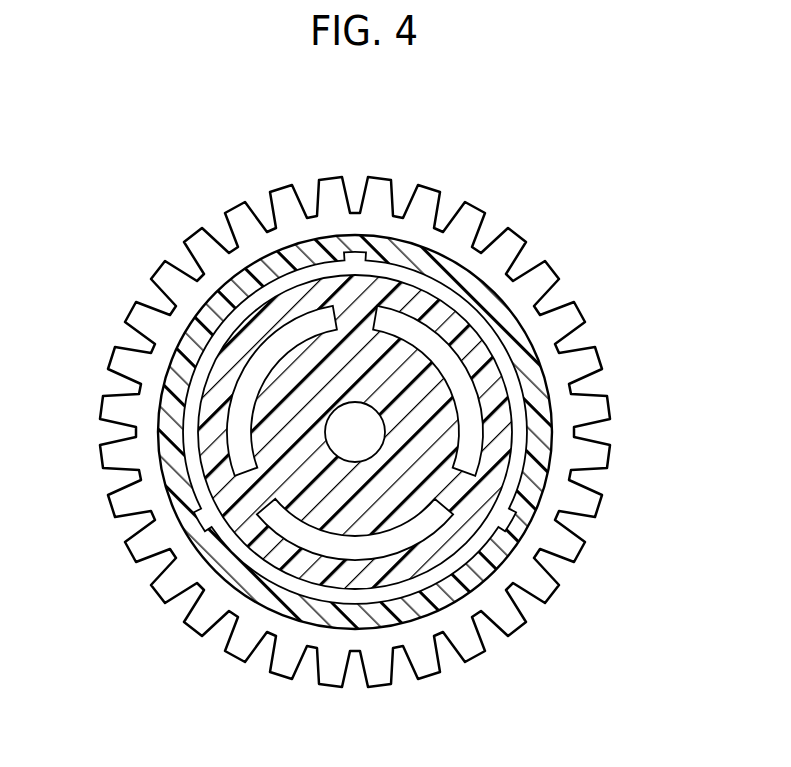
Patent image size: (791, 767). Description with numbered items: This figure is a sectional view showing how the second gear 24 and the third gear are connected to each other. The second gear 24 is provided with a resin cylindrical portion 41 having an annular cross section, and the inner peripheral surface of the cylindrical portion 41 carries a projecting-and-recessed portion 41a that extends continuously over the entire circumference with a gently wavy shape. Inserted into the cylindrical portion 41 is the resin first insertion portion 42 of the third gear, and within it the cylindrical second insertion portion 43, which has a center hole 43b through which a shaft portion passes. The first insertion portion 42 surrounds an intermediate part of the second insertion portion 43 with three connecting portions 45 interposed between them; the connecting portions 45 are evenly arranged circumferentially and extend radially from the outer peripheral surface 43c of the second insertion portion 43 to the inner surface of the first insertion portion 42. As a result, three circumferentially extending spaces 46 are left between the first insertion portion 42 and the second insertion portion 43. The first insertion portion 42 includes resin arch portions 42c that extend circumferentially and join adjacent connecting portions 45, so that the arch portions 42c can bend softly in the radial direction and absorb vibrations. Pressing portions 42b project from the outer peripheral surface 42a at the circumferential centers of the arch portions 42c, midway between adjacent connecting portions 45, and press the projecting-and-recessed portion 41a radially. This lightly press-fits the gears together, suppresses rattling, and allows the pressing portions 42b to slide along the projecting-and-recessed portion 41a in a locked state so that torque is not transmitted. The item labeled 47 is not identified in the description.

The second gear 24 is at (510, 237).
The cylindrical portion 41 is at (268, 222).
The projecting-and-recessed portion 41a is at (296, 262).
The first insertion portion 42 is at (468, 600).
The outer peripheral surface 42a is at (545, 562).
The pressing portions 42b is at (240, 330).
The arch portions 42c is at (183, 385).
The second insertion portion 43 is at (215, 345).
The center hole 43b is at (355, 440).
The outer peripheral surface 43c is at (264, 371).
The connecting portions 45 is at (398, 262).
The spaces 46 is at (297, 327).
The gap 47 is at (437, 255).